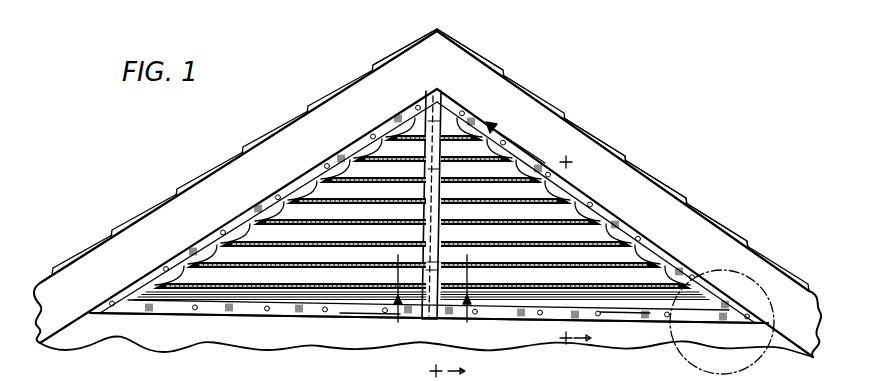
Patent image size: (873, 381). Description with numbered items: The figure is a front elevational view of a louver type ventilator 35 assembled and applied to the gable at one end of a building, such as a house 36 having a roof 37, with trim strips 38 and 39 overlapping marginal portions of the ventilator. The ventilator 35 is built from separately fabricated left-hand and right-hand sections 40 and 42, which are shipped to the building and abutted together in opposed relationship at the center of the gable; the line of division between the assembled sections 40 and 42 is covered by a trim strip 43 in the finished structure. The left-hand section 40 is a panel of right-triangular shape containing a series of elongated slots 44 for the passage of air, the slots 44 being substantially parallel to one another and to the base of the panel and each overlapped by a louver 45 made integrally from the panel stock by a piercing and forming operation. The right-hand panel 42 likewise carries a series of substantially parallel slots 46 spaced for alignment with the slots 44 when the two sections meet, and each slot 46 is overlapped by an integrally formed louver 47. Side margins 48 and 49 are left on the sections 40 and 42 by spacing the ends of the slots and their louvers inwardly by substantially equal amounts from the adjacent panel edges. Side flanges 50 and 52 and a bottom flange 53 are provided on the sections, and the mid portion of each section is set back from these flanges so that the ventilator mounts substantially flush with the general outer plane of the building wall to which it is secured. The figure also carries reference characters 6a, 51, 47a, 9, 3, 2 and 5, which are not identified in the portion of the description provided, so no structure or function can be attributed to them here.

The side flange 50 is at (347, 150).
The side flange 52 is at (579, 125).
The side margin 48 is at (313, 183).
The side margin 49 is at (662, 193).
The trim strip 43 is at (457, 100).
The house 36 is at (624, 157).
The roof 37 is at (684, 203).
The trim strip 39 is at (722, 216).
The trim strip 38 is at (167, 197).
The wall break line 6a is at (393, 378).
The louver type ventilator 35 is at (495, 127).
The right-hand section 42 is at (657, 324).
The left-hand section 40 is at (291, 325).
The bottom flange 53 is at (375, 313).
The chord plate 51 is at (625, 314).
The louvers 45 is at (271, 252).
The elongated slots 44 is at (387, 252).
The louver 47 is at (513, 258).
The slots 46 is at (548, 262).
The screen 47a is at (575, 362).
The detail circle 9 is at (757, 268).
The section line 3- 3 is at (392, 301).
The section line 2- 2 is at (538, 235).
The section line 5- 5 is at (441, 369).